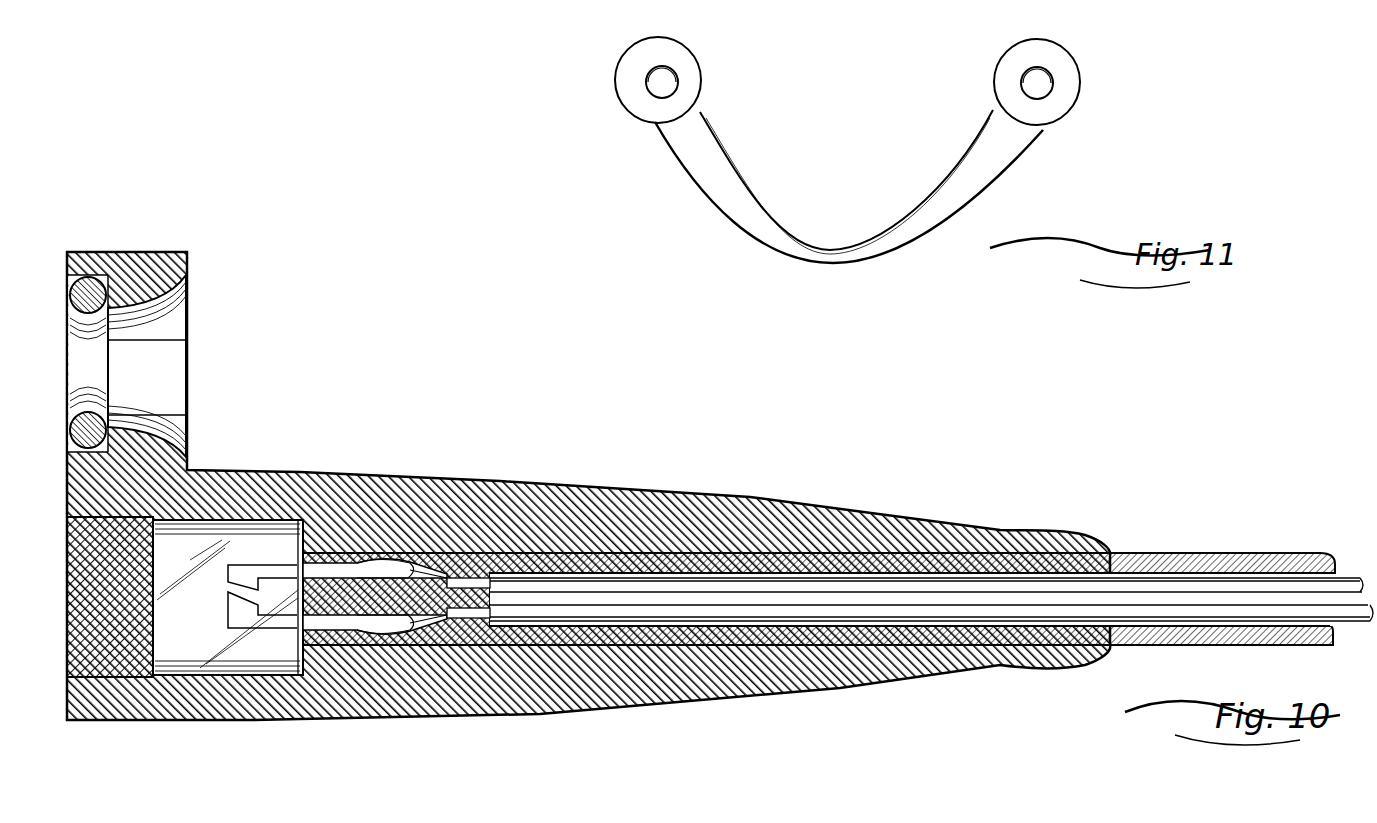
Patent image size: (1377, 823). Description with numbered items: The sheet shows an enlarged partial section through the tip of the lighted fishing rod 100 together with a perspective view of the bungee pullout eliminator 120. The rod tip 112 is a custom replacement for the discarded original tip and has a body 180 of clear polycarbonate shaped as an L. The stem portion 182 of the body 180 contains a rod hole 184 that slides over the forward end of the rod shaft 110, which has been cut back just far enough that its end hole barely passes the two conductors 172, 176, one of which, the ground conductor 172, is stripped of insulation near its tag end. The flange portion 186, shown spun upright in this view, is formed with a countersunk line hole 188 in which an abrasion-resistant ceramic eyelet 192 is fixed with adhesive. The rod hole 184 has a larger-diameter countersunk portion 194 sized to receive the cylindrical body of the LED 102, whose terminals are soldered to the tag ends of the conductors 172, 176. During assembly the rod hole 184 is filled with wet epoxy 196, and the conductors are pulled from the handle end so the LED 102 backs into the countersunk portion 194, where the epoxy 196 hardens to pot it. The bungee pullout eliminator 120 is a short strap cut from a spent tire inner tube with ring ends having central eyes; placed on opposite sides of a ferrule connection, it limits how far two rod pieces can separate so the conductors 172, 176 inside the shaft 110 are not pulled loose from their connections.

In FIG. 10, the lighted fishing rod 100 is at (530, 389).
In FIG. 10, the LED 102 is at (223, 527).
In FIG. 10, the rod shaft 110 is at (1230, 555).
In FIG. 10, the rod tip 112 is at (285, 690).
In FIG. 11, the bungee pullout eliminator 120 is at (1005, 83).
In FIG. 10, the ground conductor 172 is at (460, 555).
In FIG. 10, the conductor 176 is at (1155, 613).
In FIG. 10, the body 180 is at (588, 595).
In FIG. 10, the stem portion 182 is at (727, 498).
In FIG. 10, the rod hole 184 is at (397, 553).
In FIG. 10, the flange portion 186 is at (147, 253).
In FIG. 10, the countersunk line hole 188 is at (173, 331).
In FIG. 10, the eyelet 192 is at (93, 418).
In FIG. 10, the countersunk portion 194 is at (67, 660).
In FIG. 10, the epoxy 196 is at (1075, 535).